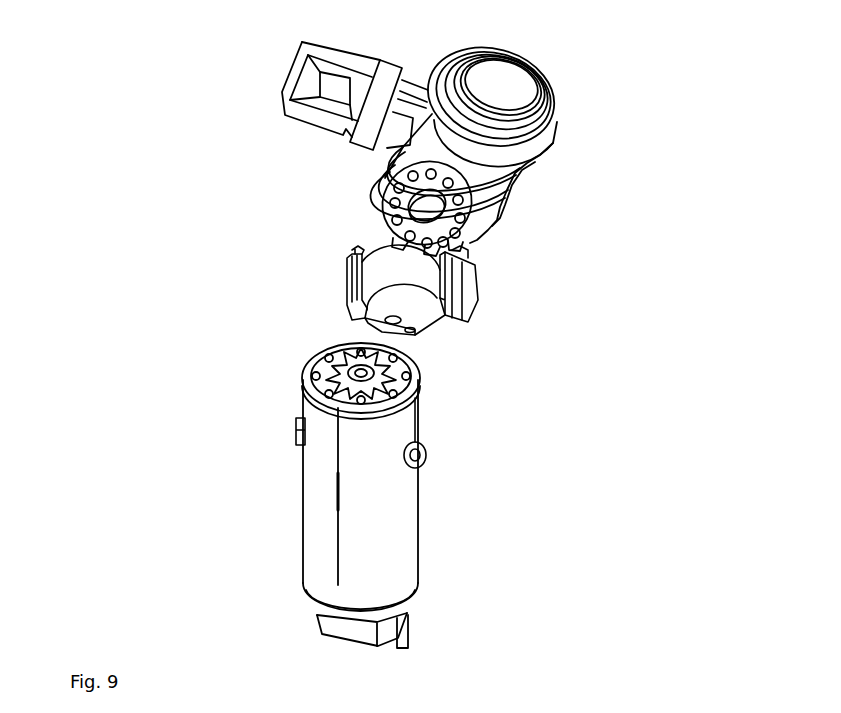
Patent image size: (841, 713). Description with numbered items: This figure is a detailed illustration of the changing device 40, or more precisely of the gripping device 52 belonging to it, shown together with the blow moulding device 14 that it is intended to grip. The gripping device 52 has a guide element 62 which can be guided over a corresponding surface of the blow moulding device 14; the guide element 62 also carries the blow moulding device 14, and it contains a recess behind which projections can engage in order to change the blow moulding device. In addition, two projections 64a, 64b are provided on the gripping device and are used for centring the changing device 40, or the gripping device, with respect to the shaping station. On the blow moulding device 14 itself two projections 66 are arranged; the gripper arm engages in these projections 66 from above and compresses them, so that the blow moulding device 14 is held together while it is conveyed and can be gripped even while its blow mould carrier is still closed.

The changing device 40 is at (597, 87).
The gripping device 52 is at (437, 296).
The projection 64a is at (347, 290).
The projection 64b is at (479, 304).
The guide element 62 is at (360, 328).
The projections 66 is at (300, 381).
The blow moulding device 14 is at (400, 527).